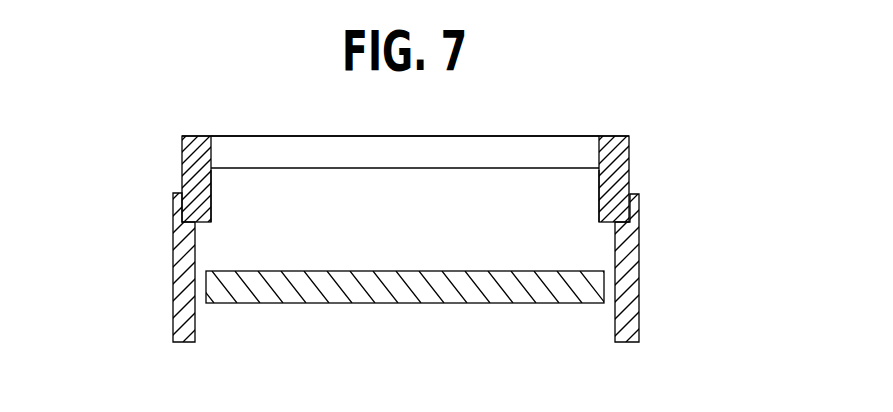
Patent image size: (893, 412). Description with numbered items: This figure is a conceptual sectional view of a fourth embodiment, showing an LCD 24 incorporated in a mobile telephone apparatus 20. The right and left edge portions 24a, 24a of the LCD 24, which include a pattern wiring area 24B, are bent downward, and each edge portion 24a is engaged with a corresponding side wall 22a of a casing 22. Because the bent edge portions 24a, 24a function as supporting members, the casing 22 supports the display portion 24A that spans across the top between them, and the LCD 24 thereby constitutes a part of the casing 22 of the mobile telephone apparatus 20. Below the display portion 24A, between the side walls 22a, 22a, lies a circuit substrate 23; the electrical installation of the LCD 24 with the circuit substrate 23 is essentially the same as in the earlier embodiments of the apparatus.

The mobile telephone apparatus 20 is at (411, 225).
The casing 22 is at (402, 267).
The side wall 22a is at (178, 238).
The circuit substrate 23 is at (424, 305).
The LCD 24 is at (434, 160).
The display portion 24A is at (442, 138).
The pattern wiring area 24B is at (188, 173).
The edge portion 24a is at (213, 200).